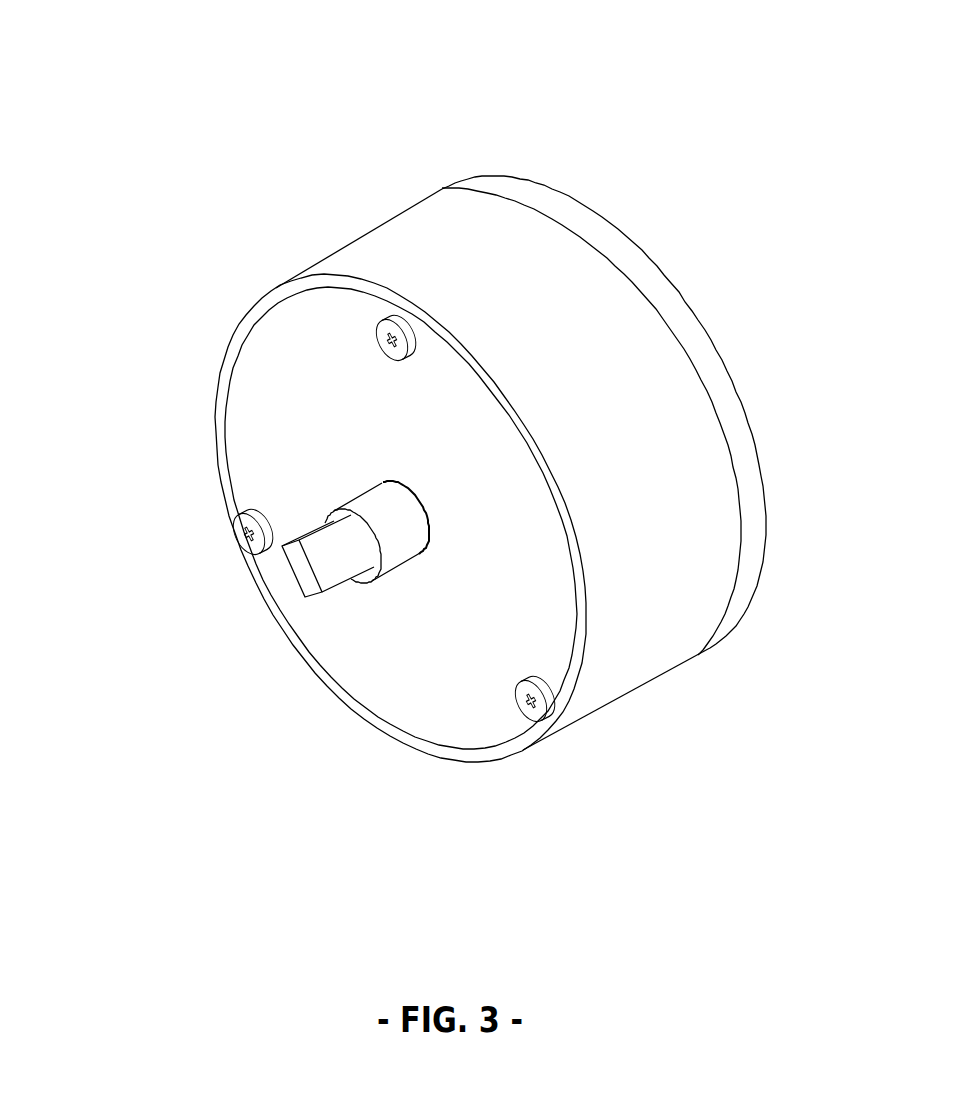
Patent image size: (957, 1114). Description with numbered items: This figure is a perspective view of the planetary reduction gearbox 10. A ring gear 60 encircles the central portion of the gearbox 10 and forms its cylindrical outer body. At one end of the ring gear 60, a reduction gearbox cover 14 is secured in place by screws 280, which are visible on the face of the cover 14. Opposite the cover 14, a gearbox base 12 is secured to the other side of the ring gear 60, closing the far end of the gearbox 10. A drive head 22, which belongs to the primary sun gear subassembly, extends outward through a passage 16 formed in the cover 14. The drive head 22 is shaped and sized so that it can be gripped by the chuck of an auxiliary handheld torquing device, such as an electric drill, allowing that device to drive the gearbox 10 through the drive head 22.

The planetary reduction gearbox 10 is at (155, 128).
The gearbox base 12 is at (735, 428).
The reduction gearbox cover 14 is at (408, 657).
The passage 16 is at (430, 516).
The drive head 22 is at (334, 563).
The ring gear 60 is at (560, 323).
The screws 280 is at (237, 520).